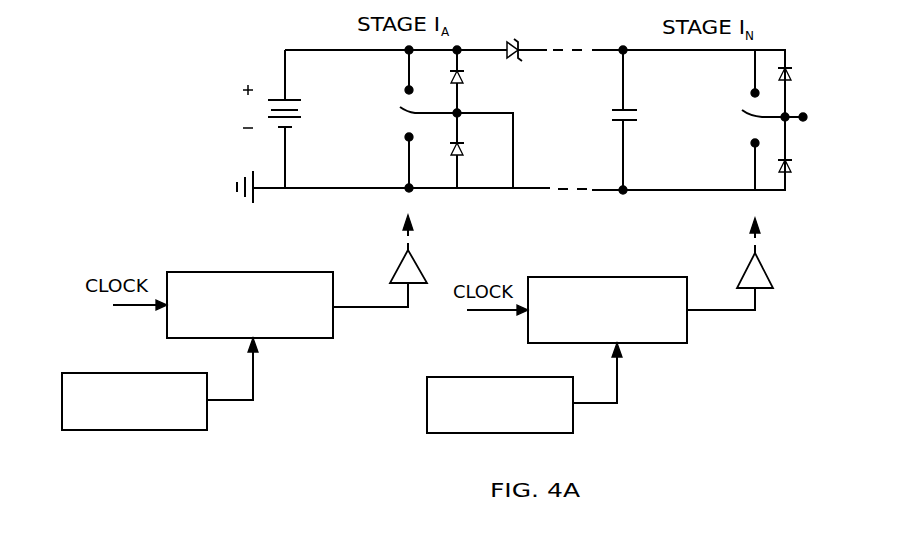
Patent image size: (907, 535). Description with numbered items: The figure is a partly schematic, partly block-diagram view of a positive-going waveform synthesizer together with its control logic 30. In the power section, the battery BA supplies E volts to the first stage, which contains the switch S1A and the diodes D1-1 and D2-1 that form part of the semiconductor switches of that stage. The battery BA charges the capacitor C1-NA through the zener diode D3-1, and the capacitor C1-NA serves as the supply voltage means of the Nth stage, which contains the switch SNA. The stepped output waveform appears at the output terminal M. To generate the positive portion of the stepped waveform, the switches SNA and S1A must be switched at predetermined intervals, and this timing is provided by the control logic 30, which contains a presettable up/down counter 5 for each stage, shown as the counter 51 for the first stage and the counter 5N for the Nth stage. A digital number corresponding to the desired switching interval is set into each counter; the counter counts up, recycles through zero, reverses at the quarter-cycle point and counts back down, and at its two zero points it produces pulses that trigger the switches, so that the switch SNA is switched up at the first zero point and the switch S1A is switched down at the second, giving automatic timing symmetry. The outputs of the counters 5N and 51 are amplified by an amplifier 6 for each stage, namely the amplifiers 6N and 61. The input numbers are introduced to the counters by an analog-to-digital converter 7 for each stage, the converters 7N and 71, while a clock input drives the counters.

The presettable up/down counter 5 is at (439, 291).
The presettable up/down counter 51 is at (313, 272).
The presettable up/down counter 5N is at (668, 277).
The amplifier 6 is at (584, 256).
The amplifier 61 is at (416, 264).
The amplifier 6N is at (765, 273).
The analog-to-digital converter 7 is at (346, 396).
The analog-to-digital converter 71 is at (207, 428).
The analog-to-digital converter 7N is at (573, 430).
The control logic 30 is at (772, 352).
The battery BA is at (301, 100).
The switch S1A is at (398, 111).
The switch SNA is at (743, 120).
The diode D1-1 is at (470, 83).
The diode D2-1 is at (464, 150).
The zener diode D3-1 is at (512, 38).
The capacitor C1-NA is at (612, 110).
The output terminal M is at (808, 114).